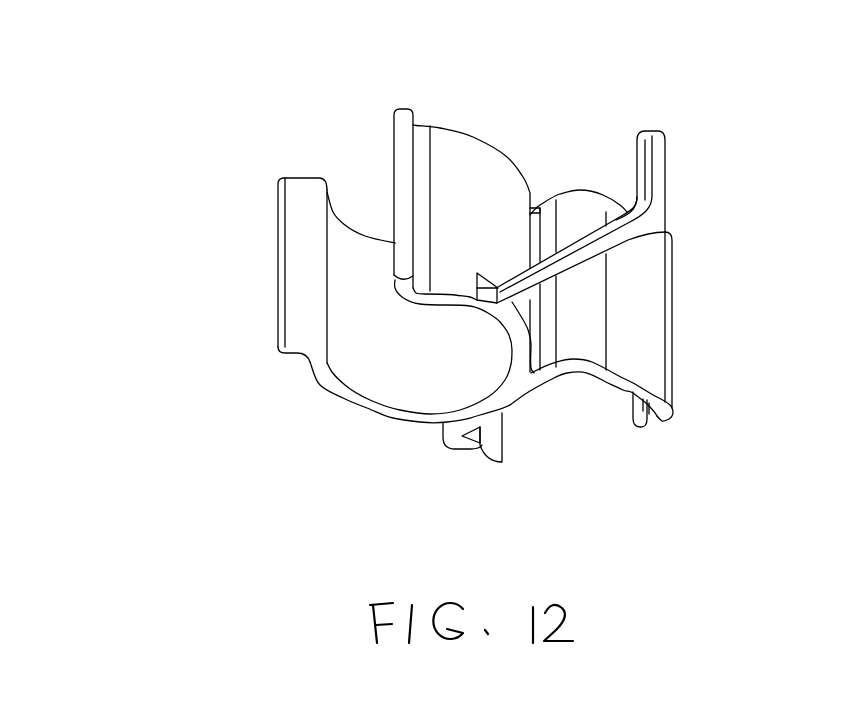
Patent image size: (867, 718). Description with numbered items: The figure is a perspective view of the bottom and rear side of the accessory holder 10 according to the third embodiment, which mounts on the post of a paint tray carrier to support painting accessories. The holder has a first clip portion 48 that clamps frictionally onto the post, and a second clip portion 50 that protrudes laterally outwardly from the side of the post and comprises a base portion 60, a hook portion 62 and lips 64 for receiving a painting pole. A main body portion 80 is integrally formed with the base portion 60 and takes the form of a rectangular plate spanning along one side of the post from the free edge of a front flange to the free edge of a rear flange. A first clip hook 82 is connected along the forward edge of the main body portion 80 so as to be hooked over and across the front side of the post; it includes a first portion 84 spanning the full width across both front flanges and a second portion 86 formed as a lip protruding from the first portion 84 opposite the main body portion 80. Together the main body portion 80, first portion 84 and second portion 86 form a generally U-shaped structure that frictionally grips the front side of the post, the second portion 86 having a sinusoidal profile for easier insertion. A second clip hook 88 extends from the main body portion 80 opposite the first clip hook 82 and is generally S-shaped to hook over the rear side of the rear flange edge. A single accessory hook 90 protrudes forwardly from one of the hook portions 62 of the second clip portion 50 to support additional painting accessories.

The accessory holder 10 is at (93, 195).
The second clip portion 50 is at (414, 72).
The first clip portion 48 is at (588, 176).
The base portion 60 is at (475, 386).
The hook portion 62 is at (353, 298).
The lips 64 is at (293, 207).
The main body portion 80 is at (510, 405).
The first clip hook 82 is at (692, 381).
The first portion 84 is at (643, 343).
The second portion 86 is at (653, 417).
The second clip hook 88 is at (482, 447).
The accessory hook 90 is at (622, 253).